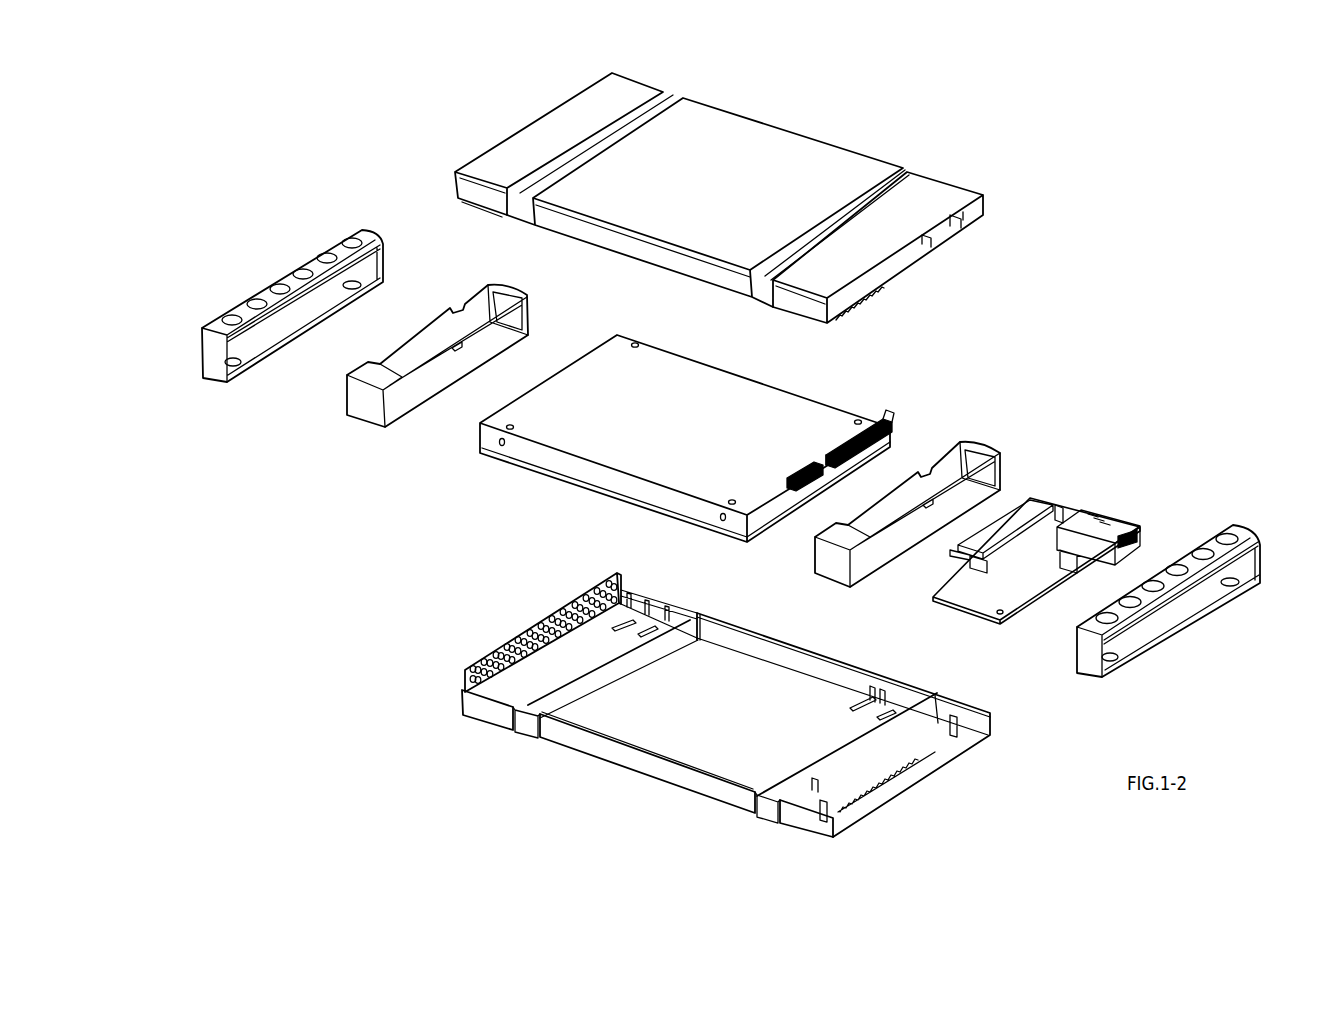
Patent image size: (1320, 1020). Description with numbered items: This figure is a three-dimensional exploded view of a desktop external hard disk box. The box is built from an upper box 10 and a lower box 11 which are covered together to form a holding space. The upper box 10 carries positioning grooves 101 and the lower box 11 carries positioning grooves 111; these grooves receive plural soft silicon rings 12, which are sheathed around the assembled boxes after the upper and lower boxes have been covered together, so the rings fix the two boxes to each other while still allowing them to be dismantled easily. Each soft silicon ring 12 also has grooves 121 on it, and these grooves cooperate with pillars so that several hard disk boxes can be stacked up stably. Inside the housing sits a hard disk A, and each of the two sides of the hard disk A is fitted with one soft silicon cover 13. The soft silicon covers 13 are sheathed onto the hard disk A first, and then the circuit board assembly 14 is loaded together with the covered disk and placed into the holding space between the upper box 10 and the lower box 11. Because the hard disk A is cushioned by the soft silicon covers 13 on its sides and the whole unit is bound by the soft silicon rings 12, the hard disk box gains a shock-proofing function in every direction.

The upper box 10 is at (719, 178).
The positioning groove 101 is at (660, 105).
The lower box 11 is at (726, 724).
The positioning groove 111 is at (530, 738).
The soft silicon ring 12 is at (262, 282).
The groove 121 is at (350, 238).
The soft silicon cover 13 is at (487, 298).
The circuit board assembly 14 is at (1077, 505).
The hard disk A is at (522, 455).